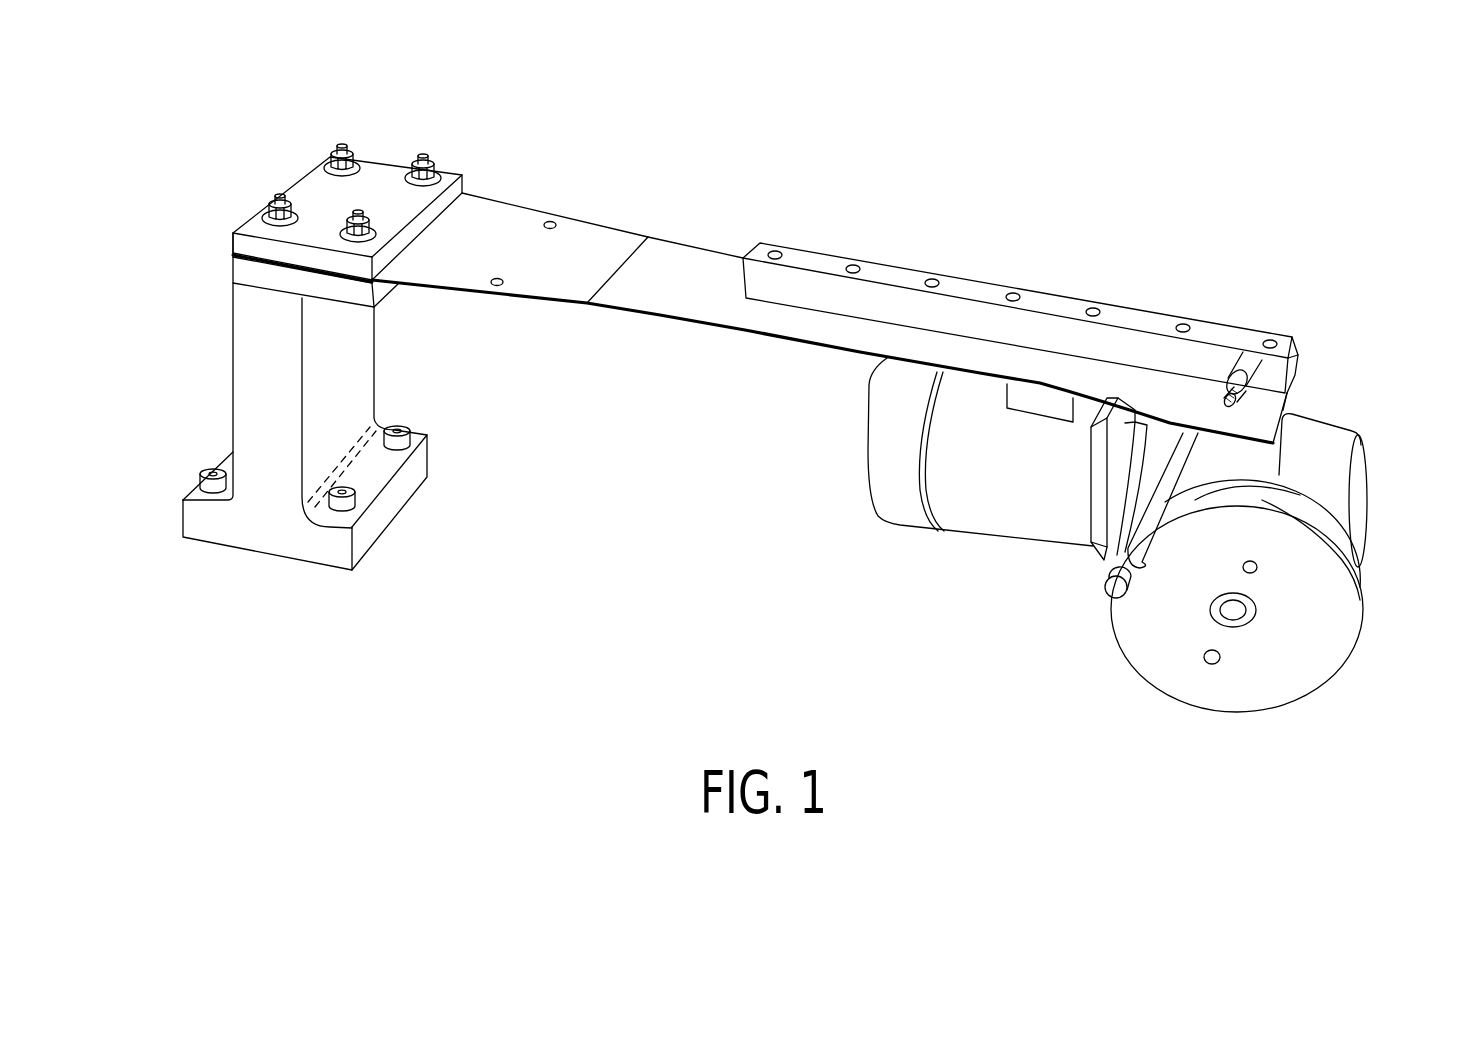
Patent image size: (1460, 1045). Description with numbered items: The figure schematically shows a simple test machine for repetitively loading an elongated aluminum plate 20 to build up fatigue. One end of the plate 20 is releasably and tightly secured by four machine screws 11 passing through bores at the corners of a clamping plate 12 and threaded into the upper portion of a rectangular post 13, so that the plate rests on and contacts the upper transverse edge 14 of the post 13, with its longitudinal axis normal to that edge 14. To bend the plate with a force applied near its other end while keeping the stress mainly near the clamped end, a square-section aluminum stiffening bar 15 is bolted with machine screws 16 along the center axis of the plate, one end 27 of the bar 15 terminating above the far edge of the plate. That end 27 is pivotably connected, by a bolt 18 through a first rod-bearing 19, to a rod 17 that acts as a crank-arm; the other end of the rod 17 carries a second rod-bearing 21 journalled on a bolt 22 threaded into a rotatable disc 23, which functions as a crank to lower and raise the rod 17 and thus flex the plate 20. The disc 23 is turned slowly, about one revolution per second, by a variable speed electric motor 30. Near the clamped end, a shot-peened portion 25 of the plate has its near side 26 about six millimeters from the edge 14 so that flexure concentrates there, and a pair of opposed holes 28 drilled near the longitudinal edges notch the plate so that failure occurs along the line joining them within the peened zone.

The machine screws 11 is at (342, 150).
The clamping plate 12 is at (305, 182).
The rectangular post 13 is at (233, 357).
The upper transverse edge 14 is at (333, 277).
The stiffening bar 15 is at (967, 290).
The machine screws 16 is at (1013, 294).
The rod 17 is at (1216, 458).
The bolt 18 is at (1231, 392).
The first rod-bearing 19 is at (1246, 364).
The plate 20 is at (702, 258).
The second rod-bearing 21 is at (1112, 600).
The bolt 22 is at (1107, 563).
The rotatable disc 23 is at (1313, 692).
The shot-peened portion 25 is at (620, 203).
The near side 26 is at (492, 208).
The end of the bar 27 is at (1298, 362).
The holes 28 is at (550, 221).
The variable speed electric motor 30 is at (970, 532).